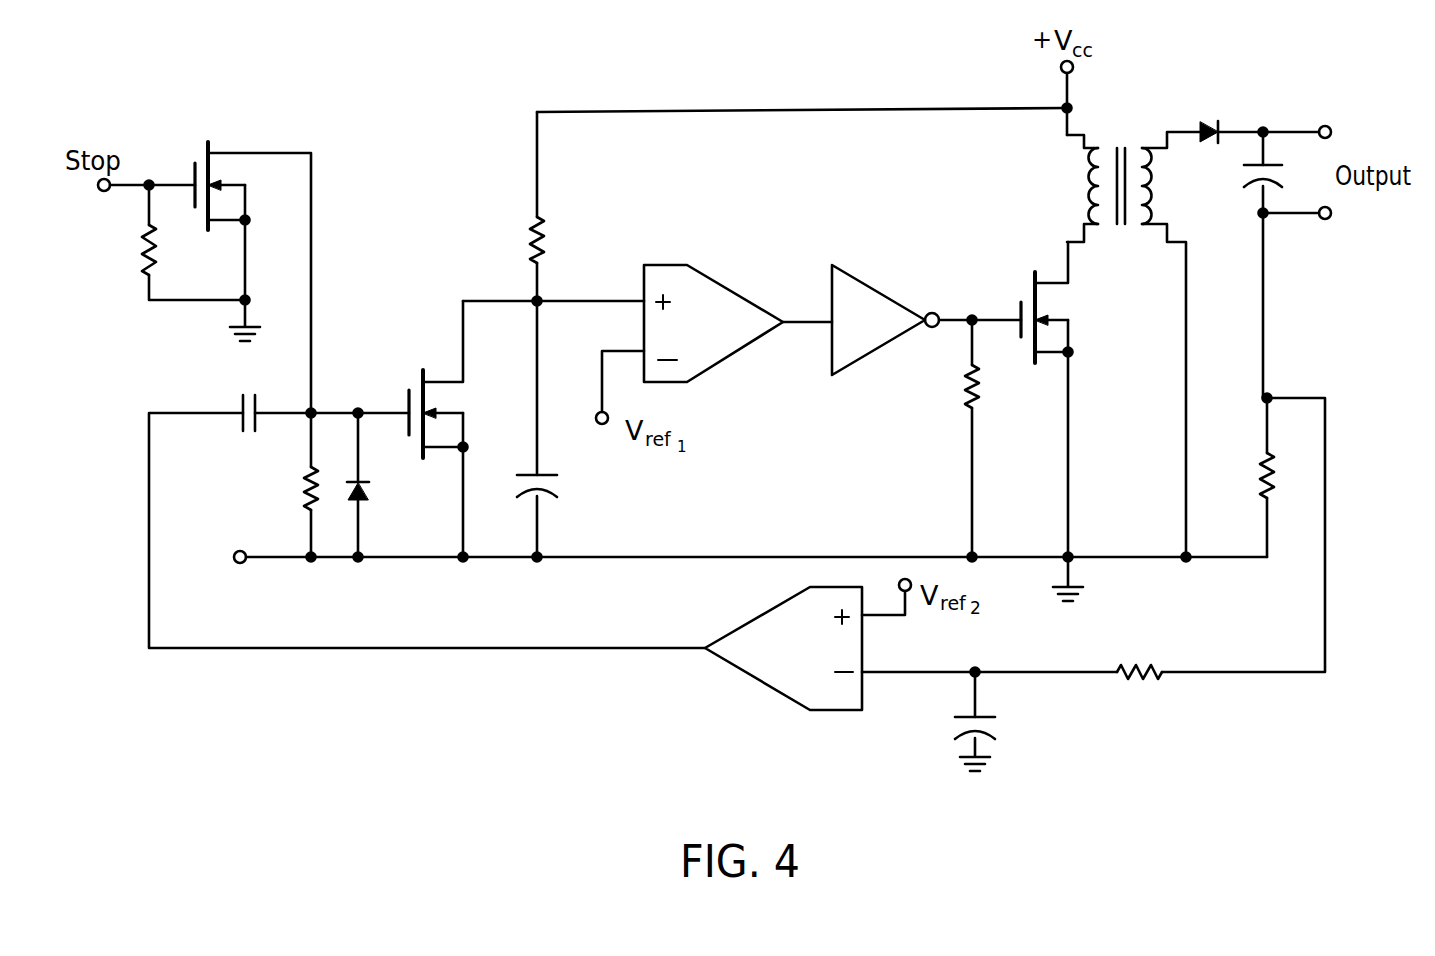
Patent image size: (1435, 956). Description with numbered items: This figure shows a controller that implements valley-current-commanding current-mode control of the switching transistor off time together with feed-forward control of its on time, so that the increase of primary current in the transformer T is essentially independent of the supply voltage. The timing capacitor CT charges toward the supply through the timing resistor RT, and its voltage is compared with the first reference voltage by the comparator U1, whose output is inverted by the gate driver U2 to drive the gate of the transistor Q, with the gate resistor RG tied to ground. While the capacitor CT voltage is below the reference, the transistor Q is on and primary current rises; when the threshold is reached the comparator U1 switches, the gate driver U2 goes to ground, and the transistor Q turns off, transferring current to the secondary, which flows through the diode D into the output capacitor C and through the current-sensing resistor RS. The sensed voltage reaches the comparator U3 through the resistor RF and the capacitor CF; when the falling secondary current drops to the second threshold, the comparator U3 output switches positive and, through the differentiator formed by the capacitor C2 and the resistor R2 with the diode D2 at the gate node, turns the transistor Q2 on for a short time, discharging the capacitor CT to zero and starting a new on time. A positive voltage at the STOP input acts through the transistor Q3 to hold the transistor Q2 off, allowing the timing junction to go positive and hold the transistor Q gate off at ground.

The transistor Q3 is at (226, 277).
The capacitor C2 is at (319, 429).
The resistor R2 is at (289, 485).
The diode D2 is at (381, 485).
The transistor Q2 is at (458, 429).
The timing resistor RT is at (514, 206).
The timing capacitor CT is at (560, 429).
The comparator U1 is at (714, 344).
The gate driver U2 is at (926, 320).
The gate resistor RG is at (995, 438).
The transistor Q is at (1059, 421).
The transformer T is at (1133, 318).
The diode D is at (1259, 111).
The capacitor C is at (1252, 265).
The current-sensing resistor RS is at (1248, 476).
The resistor RF is at (1093, 538).
The capacitor CF is at (993, 721).
The comparator U3 is at (808, 644).